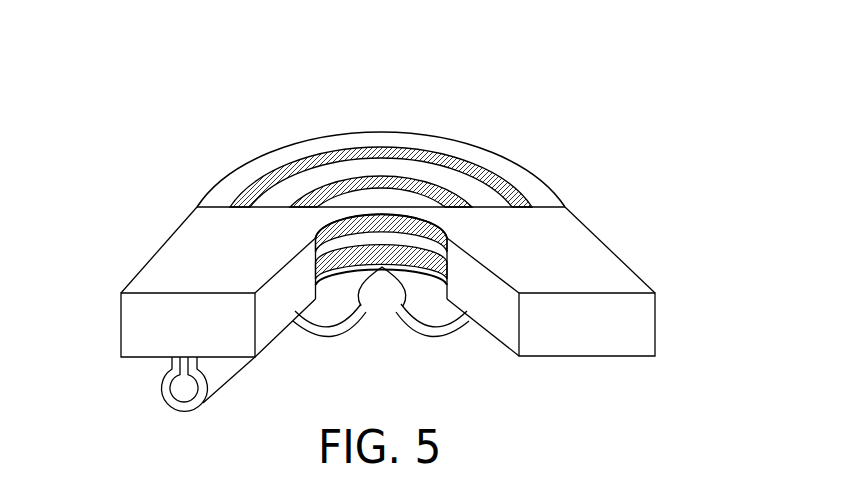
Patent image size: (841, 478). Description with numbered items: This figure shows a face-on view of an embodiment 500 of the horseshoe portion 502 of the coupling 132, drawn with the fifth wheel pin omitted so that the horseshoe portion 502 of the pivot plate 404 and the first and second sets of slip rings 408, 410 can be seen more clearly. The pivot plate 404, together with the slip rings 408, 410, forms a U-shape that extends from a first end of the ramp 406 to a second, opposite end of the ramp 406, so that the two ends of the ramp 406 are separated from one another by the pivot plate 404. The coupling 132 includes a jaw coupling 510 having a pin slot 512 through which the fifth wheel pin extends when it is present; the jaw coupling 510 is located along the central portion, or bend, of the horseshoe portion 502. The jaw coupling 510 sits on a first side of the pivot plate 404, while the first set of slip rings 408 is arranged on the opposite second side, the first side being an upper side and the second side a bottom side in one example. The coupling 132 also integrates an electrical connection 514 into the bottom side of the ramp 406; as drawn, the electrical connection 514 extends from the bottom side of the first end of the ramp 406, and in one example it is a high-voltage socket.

The embodiment 500 is at (548, 92).
The horseshoe portion 502 is at (152, 162).
The coupling 132 is at (552, 163).
The pivot plate 404 is at (383, 137).
The ramp 406 is at (120, 305).
The first set of slip rings 408 is at (270, 167).
The second set of slip rings 410 is at (408, 258).
The jaw coupling 510 is at (338, 328).
The pin slot 512 is at (382, 305).
The electrical connection 514 is at (163, 392).